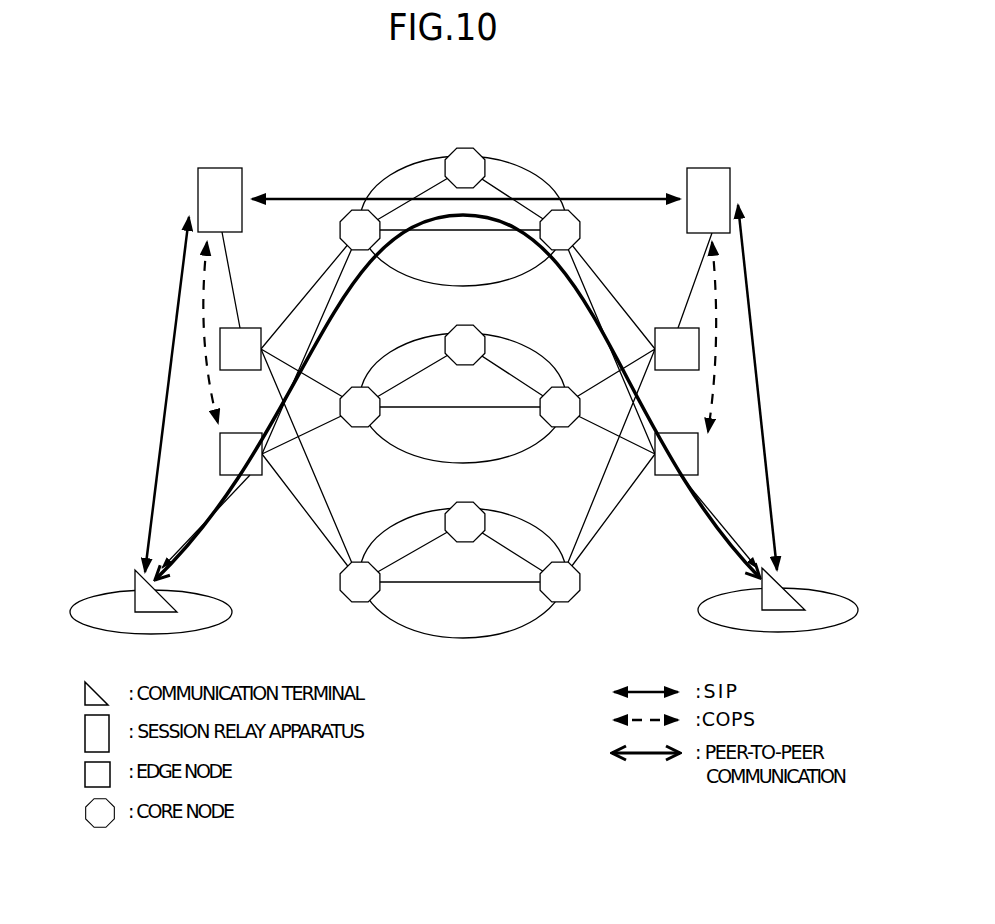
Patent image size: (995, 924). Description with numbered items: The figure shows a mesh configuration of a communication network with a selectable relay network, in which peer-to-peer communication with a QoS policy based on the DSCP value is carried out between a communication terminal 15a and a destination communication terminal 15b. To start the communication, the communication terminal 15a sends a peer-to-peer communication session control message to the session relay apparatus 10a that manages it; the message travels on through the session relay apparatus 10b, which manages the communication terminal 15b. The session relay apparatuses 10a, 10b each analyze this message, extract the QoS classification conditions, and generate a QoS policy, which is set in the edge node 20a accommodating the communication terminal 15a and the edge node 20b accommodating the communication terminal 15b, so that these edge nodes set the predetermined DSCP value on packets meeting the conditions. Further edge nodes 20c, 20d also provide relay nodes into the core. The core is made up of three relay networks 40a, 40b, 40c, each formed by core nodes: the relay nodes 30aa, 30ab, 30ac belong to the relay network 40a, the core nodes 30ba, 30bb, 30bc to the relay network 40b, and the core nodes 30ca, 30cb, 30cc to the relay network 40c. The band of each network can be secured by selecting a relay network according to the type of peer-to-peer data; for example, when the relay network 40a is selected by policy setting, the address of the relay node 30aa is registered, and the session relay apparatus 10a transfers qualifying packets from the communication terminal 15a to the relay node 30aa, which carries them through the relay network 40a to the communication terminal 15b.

The session relay apparatus 10a is at (242, 183).
The session relay apparatus 10b is at (730, 198).
The communication terminal 15a is at (160, 585).
The communication terminal 15b is at (780, 586).
The edge node 20a is at (225, 433).
The edge node 20b is at (660, 433).
The edge node 20c is at (220, 352).
The edge node 20d is at (699, 345).
The relay node 30aa is at (340, 233).
The core node 30ab is at (580, 230).
The core node 30ac is at (470, 149).
The core node 30ba is at (379, 400).
The core node 30bb is at (543, 414).
The core node 30bc is at (470, 326).
The core node 30ca is at (379, 575).
The core node 30cb is at (543, 589).
The core node 30cc is at (470, 503).
The relay network 40a is at (535, 166).
The relay network 40b is at (535, 343).
The relay network 40c is at (535, 518).